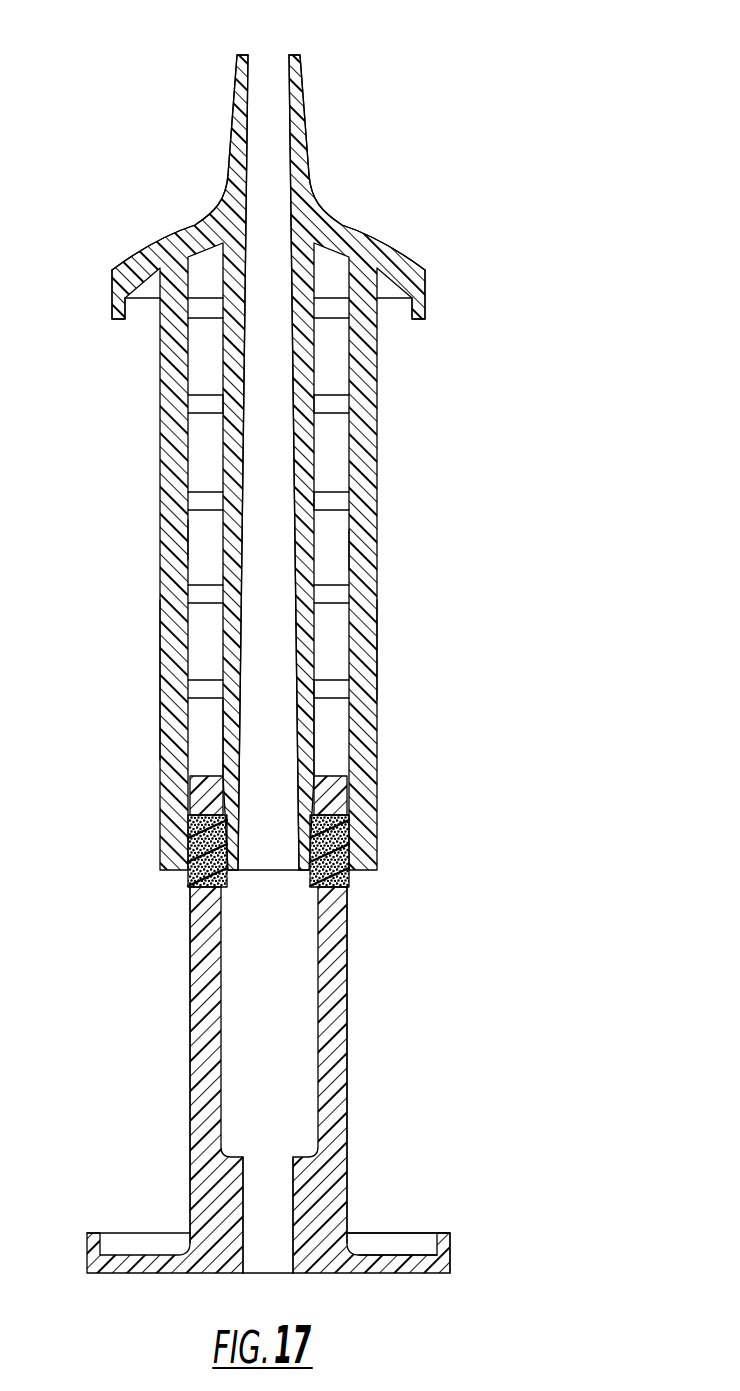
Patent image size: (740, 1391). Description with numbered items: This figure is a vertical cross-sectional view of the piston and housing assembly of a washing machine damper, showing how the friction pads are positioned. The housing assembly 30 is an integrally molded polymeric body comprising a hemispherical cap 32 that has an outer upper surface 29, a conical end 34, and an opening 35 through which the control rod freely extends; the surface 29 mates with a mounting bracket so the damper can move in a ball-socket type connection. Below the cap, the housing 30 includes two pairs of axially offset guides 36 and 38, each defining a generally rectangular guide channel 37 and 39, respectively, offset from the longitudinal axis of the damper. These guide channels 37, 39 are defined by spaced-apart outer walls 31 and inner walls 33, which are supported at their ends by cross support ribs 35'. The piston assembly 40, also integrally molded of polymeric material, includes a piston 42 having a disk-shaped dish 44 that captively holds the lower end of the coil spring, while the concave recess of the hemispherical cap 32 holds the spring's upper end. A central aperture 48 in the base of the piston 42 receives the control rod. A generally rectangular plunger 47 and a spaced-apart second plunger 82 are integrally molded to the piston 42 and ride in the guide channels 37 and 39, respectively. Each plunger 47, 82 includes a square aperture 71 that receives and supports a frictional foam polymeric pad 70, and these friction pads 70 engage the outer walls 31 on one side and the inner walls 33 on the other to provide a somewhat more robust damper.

The outer upper surface 29 is at (358, 232).
The housing assembly 30 is at (156, 402).
The outer walls 31 is at (197, 540).
The hemispherical cap 32 is at (430, 256).
The inner walls 33 is at (222, 455).
The conical end 34 is at (306, 128).
The opening 35 is at (300, 435).
The cross support ribs 35' is at (337, 517).
The guide 36 is at (160, 687).
The guide channel 37 is at (205, 757).
The guide 38 is at (376, 640).
The guide channel 39 is at (330, 732).
The piston assembly 40 is at (393, 1109).
The piston 42 is at (455, 1252).
The disk-shaped dish 44 is at (392, 1243).
The plunger 47 is at (189, 1062).
The aperture 48 is at (280, 1273).
The friction pad 70 is at (190, 878).
The aperture 71 is at (227, 876).
The second plunger 82 is at (347, 1055).